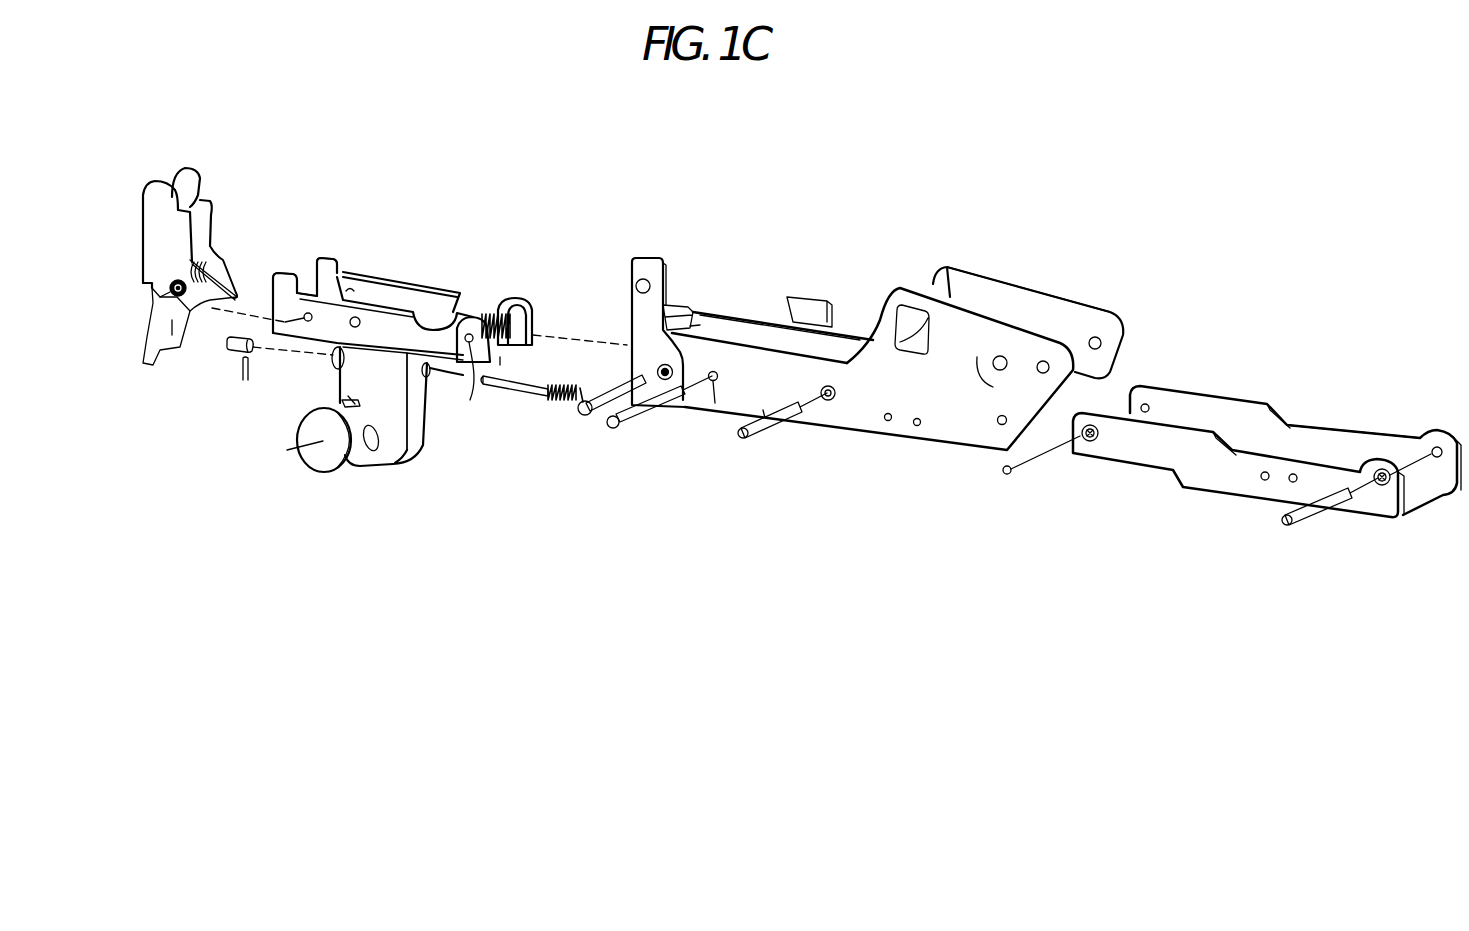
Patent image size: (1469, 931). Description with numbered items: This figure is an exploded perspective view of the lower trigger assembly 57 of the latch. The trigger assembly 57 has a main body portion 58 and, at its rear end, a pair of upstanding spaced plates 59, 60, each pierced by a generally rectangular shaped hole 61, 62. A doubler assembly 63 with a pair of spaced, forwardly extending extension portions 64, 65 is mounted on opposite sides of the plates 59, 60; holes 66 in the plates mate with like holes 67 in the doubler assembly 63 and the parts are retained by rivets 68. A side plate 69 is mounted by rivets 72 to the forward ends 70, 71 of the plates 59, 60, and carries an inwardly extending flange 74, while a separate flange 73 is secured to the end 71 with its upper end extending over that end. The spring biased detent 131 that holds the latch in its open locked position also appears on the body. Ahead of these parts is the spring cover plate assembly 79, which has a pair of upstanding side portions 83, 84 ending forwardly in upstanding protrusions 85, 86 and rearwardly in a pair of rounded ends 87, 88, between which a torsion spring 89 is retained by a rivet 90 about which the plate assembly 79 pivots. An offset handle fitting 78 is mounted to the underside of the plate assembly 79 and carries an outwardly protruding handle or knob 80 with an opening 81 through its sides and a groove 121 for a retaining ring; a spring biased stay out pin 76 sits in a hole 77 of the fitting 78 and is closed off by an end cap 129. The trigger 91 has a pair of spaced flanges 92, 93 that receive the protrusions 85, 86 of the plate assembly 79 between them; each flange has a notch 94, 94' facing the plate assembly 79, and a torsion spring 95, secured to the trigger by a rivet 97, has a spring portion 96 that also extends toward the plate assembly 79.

The lower trigger assembly 57 is at (1130, 246).
The main body portion 58 is at (547, 340).
The upstanding plate 59 is at (1003, 278).
The upstanding plate 60 is at (913, 385).
The rectangular hole 61 is at (890, 312).
The rectangular hole 62 is at (350, 405).
The doubler assembly 63 is at (1365, 436).
The extension portion 64 is at (1165, 447).
The extension portion 65 is at (1210, 397).
The holes 66 is at (715, 403).
The holes 67 is at (1088, 441).
The rivets 68 is at (650, 410).
The side plate 69 is at (641, 322).
The forward end 70 is at (701, 307).
The forward end 71 is at (737, 315).
The rivets 72 is at (613, 428).
The flange 73 is at (787, 307).
The inwardly extending flange 74 is at (677, 305).
The spring biased stay out pin 76 is at (530, 388).
The hole 77 is at (470, 400).
The offset handle fitting 78 is at (383, 410).
The spring cover plate assembly 79 is at (383, 293).
The handle or knob 80 is at (357, 453).
The opening 81 is at (373, 445).
The upstanding side portion 83 is at (300, 293).
The upstanding side portion 84 is at (352, 290).
The upstanding protrusion 85 is at (273, 278).
The upstanding protrusion 86 is at (327, 257).
The rounded end 87 is at (452, 307).
The rounded end 88 is at (510, 297).
The torsion spring 89 is at (507, 343).
The rivet 90 is at (500, 357).
The trigger 91 is at (248, 147).
The flange 92 is at (152, 198).
The flange 93 is at (193, 180).
The notch 94 is at (176, 277).
The notch 94' is at (245, 202).
The torsion spring 95 is at (212, 257).
The spring portion 96 is at (220, 300).
The rivet 97 is at (150, 297).
The groove 121 is at (337, 473).
The end cap 129 is at (230, 352).
The spring biased detent 131 is at (1003, 357).